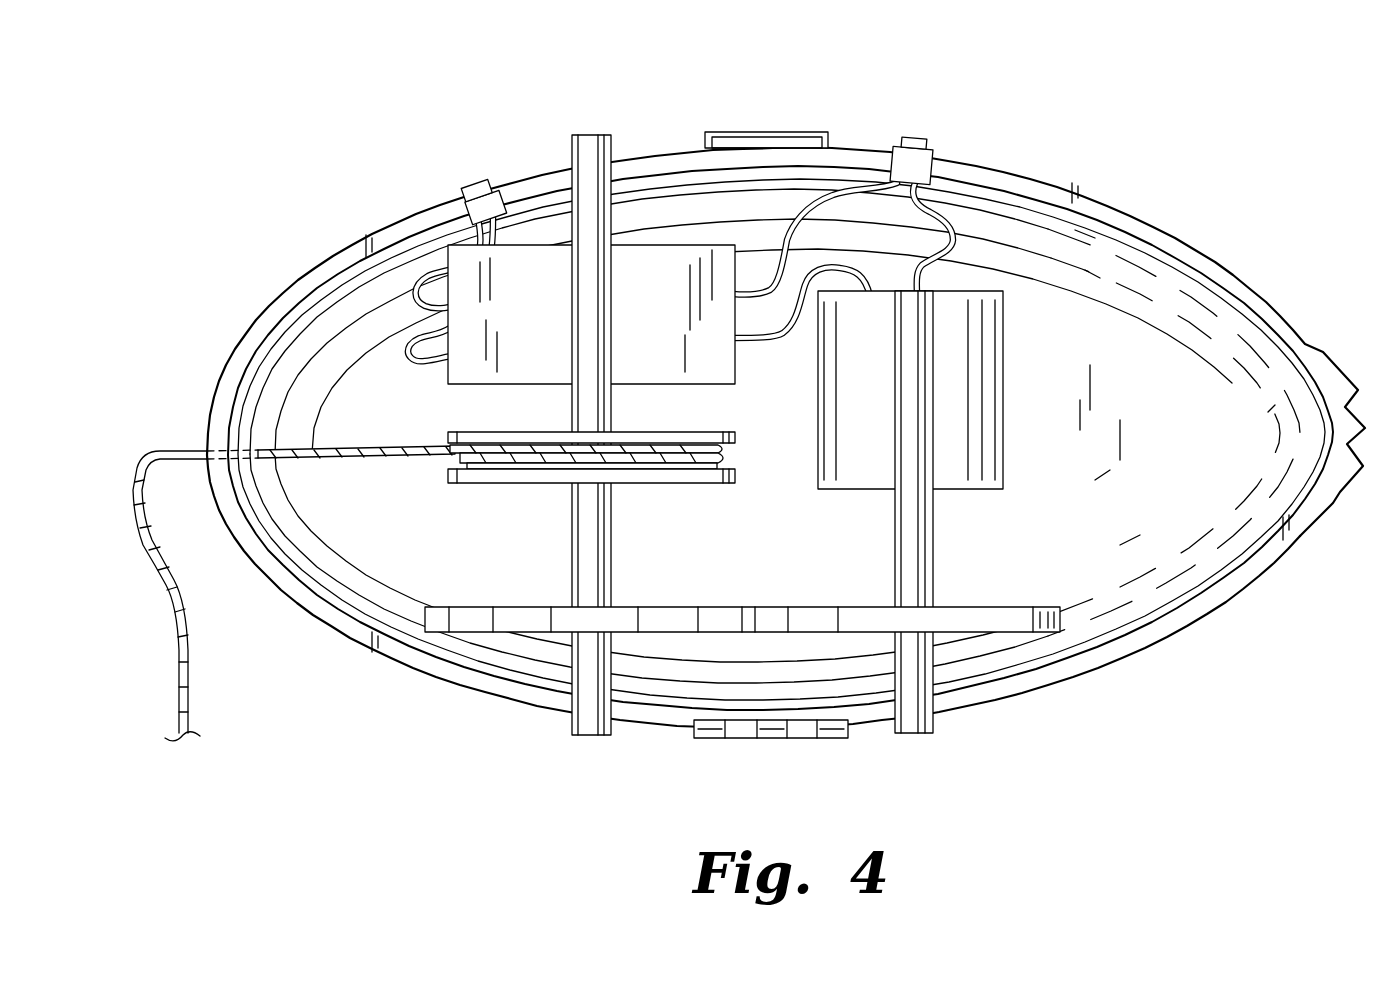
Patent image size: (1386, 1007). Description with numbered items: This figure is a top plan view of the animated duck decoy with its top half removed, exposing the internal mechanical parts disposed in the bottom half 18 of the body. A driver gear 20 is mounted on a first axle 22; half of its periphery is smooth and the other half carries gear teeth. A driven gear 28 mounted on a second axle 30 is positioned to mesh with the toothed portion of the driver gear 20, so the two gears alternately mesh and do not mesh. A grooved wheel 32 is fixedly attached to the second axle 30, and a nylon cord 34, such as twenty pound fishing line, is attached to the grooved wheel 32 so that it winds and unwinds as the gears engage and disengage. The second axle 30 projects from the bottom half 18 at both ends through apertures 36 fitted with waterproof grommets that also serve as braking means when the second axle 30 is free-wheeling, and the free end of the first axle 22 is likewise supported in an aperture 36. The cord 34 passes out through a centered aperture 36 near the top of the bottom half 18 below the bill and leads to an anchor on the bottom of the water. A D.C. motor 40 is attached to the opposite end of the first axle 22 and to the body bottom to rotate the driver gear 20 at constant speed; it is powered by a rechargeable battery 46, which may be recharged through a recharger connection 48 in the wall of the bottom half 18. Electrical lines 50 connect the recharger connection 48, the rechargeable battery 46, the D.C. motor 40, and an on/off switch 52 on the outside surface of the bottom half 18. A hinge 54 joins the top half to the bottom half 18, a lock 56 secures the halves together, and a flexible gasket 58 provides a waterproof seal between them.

The bottom half 18 is at (1165, 426).
The driver gear 20 is at (742, 464).
The first axle 22 is at (913, 735).
The driven gear 28 is at (647, 597).
The second axle 30 is at (595, 737).
The grooved wheel 32 is at (446, 489).
The nylon cord 34 is at (175, 582).
The apertures 36 is at (205, 440).
The D.C. motor 40 is at (925, 401).
The rechargeable battery 46 is at (665, 328).
The recharger connection 48 is at (478, 176).
The electrical lines 50 is at (842, 272).
The on/off switch 52 is at (918, 138).
The hinge 54 is at (768, 740).
The lock 56 is at (780, 132).
The flexible gasket 58 is at (1175, 245).